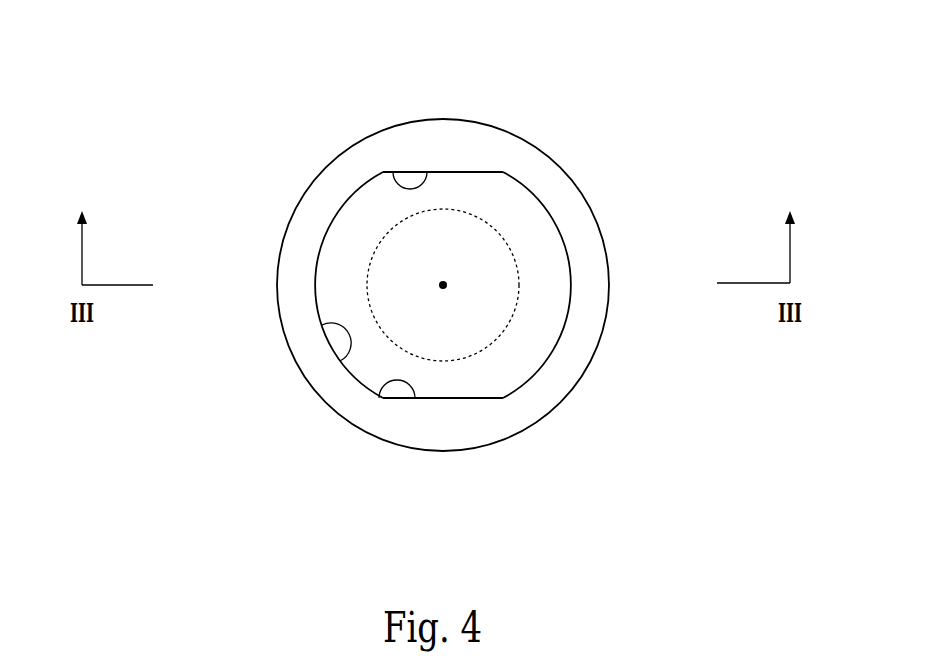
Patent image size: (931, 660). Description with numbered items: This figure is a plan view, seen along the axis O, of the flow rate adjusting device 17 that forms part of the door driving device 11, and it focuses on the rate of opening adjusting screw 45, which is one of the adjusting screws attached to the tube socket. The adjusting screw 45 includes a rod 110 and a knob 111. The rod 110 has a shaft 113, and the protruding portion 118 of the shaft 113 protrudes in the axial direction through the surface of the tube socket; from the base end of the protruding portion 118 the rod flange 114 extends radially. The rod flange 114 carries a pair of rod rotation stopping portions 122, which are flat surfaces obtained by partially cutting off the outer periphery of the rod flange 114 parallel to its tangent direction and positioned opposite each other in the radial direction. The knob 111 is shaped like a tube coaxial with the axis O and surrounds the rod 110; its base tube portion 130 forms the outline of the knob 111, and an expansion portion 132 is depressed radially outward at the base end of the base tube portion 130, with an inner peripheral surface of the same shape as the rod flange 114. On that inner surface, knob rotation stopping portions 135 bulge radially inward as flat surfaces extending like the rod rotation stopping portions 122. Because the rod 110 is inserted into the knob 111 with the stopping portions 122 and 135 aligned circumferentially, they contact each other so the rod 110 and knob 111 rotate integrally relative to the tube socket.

The flow rate adjusting device 17 is at (594, 93).
The door driving device 11 is at (464, 285).
The rate of opening adjusting screw 45 is at (662, 160).
The base tube portion 130 is at (307, 222).
The knob 111 is at (612, 222).
The rod 110 is at (582, 259).
The rod flange 114 is at (553, 305).
The rod rotation stopping portion 122 is at (470, 172).
The knob rotation stopping portion 135 is at (393, 172).
The expansion portion 132 is at (340, 361).
The protruding portion 118 is at (472, 357).
The shaft 113 is at (479, 357).
The axis O is at (447, 290).